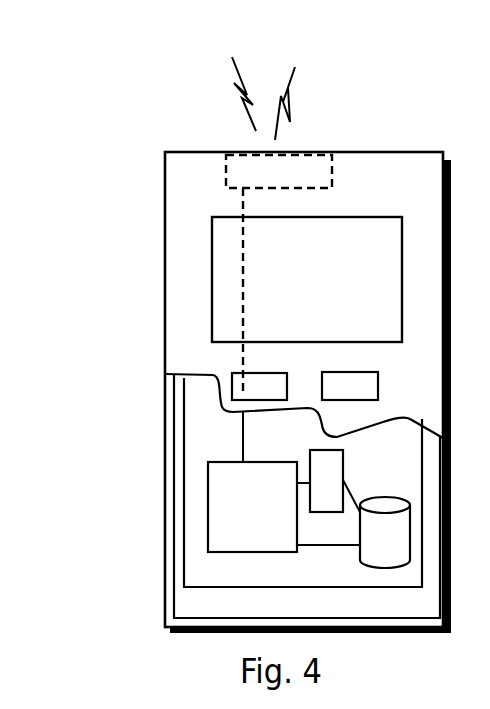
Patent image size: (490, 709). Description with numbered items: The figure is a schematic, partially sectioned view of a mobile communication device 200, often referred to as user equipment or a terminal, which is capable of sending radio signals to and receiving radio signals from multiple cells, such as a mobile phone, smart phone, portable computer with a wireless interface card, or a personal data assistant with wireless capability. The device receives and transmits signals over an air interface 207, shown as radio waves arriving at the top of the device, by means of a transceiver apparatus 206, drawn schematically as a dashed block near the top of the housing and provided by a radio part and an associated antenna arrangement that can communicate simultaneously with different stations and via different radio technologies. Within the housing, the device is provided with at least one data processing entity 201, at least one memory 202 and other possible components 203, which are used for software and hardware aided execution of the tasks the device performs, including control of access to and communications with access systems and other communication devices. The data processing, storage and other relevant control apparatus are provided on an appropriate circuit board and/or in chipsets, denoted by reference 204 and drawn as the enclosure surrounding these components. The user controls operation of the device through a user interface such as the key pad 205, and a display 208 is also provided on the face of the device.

The mobile communication device 200 is at (165, 193).
The data processing entity 201 is at (215, 493).
The memory 202 is at (380, 543).
The other possible components 203 is at (327, 467).
The circuit board and/or chipsets 204 is at (208, 570).
The key pad 205 is at (233, 388).
The transceiver apparatus 206 is at (322, 167).
The air interface 207 is at (307, 88).
The display 208 is at (228, 267).